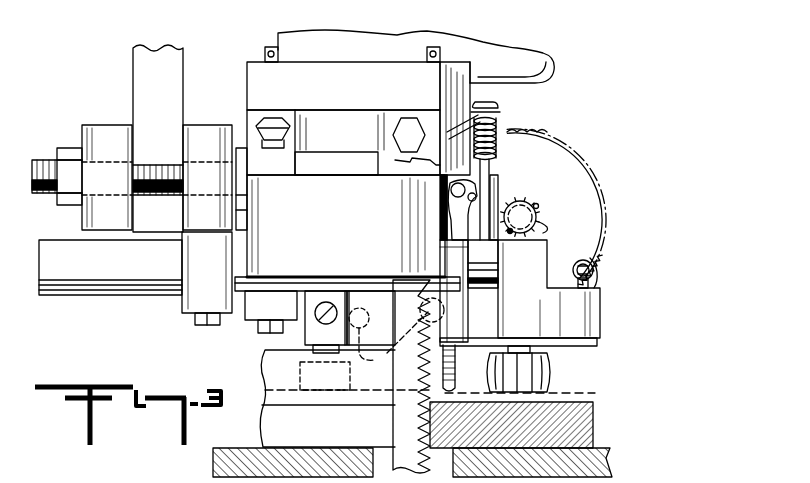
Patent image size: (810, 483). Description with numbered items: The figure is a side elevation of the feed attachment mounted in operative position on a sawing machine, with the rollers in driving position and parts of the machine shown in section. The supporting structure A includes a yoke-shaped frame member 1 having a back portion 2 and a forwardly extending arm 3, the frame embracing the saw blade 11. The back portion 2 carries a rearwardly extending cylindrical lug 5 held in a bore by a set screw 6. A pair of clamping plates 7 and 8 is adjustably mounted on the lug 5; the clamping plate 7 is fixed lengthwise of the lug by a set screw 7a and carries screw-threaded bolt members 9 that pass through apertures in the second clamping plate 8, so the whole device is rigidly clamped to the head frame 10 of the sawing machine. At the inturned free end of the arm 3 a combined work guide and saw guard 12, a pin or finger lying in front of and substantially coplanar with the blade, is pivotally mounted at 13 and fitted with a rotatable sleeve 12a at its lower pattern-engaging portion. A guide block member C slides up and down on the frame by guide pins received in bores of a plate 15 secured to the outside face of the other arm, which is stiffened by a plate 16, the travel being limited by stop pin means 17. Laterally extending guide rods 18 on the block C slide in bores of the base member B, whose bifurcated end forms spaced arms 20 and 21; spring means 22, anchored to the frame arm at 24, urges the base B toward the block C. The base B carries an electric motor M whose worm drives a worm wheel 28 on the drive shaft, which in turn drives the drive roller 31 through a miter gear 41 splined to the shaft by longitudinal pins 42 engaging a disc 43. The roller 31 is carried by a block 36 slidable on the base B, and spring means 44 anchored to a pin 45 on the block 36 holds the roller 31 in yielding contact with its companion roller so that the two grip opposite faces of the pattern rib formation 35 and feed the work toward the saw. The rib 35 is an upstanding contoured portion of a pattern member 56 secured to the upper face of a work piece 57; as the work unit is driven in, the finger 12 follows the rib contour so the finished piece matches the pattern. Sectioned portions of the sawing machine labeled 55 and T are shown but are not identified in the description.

The yoke-shaped frame member 1 is at (236, 264).
The back portion 2 is at (290, 120).
The forwardly extending arm 3 is at (322, 221).
The lug 5 is at (86, 266).
The set screw 6 is at (260, 327).
The clamping plate 7 is at (208, 138).
The set screw 7a is at (208, 326).
The second clamping plate 8 is at (98, 134).
The screw-threaded bolt members 9 is at (150, 193).
The head frame 10 is at (133, 61).
The saw blade 11 is at (420, 391).
The combined work guide and saw guard 12 is at (450, 290).
The rotatable sleeve 12a is at (445, 344).
The pivot mounting 13 is at (451, 190).
The plate 15 is at (404, 97).
The stiffening plate 16 is at (361, 136).
The stop pin means 17 is at (276, 54).
The guide rods 18 is at (393, 339).
The arm 20 is at (310, 330).
The arm 21 is at (480, 321).
The spring means 22 is at (494, 120).
The spring anchor 24 is at (492, 102).
The worm wheel 28 is at (590, 193).
The drive roller 31 is at (550, 367).
The pattern rib formation 35 is at (590, 368).
The block 36 is at (535, 308).
The miter gear 41 is at (532, 202).
The longitudinal pins 42 is at (540, 208).
The disc 43 is at (547, 228).
The spring means 44 is at (582, 266).
The pin 45 is at (598, 276).
The base block 55 is at (306, 378).
The pattern member 56 is at (594, 399).
The work piece 57 is at (594, 422).
The supporting structure A is at (244, 98).
The base member B is at (608, 293).
The guide block member C is at (385, 306).
The electric motor M is at (405, 57).
The table T is at (600, 452).